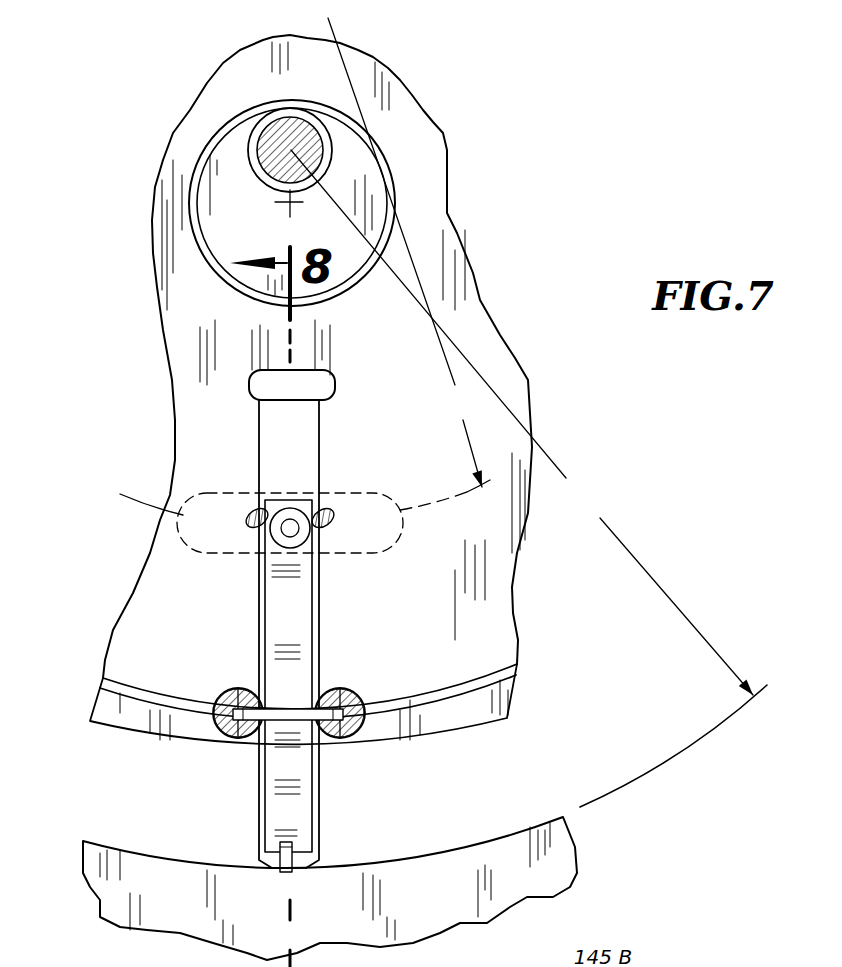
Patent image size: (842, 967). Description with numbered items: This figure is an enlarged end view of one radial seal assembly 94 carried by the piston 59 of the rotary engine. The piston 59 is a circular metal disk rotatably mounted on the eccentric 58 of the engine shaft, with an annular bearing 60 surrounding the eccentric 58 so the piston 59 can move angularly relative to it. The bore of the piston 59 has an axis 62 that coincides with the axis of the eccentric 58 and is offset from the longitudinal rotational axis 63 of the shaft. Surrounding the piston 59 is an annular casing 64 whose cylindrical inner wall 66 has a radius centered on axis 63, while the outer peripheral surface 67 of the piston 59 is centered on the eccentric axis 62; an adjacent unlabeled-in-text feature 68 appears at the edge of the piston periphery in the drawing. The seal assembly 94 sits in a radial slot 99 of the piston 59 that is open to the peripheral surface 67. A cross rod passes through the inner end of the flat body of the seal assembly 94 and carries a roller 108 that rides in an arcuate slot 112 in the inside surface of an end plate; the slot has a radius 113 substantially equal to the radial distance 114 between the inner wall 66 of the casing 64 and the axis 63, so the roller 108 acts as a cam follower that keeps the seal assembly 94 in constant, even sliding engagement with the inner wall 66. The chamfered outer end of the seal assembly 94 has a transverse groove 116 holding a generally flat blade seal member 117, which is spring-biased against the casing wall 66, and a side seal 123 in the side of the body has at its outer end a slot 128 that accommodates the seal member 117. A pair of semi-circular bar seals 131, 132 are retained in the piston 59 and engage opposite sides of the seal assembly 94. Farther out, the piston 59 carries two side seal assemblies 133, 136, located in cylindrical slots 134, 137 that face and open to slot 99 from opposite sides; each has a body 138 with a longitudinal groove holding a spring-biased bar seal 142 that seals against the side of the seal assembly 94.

The piston 59 is at (393, 72).
The eccentric 58 is at (350, 157).
The annular bearing 60 is at (387, 180).
The longitudinal rotational axis 63 is at (285, 147).
The axis of bore 62 is at (283, 203).
The radius of arcuate slot 113 is at (305, 266).
The radial distance 114 is at (522, 422).
The radial slot 99 is at (278, 428).
The seal assembly 94 is at (297, 621).
The roller 108 is at (292, 508).
The semi-circular bar seal 131 is at (256, 509).
The semi-circular bar seal 132 is at (326, 528).
The arcuate slot 112 is at (177, 540).
The guide rail upper surface 68 is at (500, 672).
The outer peripheral surface 67 is at (473, 727).
The side seal assembly 133 is at (208, 675).
The cylindrical slot 134 is at (218, 702).
The side seal assembly 136 is at (356, 668).
The cylindrical slot 137 is at (358, 690).
The bar seal 142 is at (252, 710).
The body 138 is at (232, 733).
The side seal 123 is at (307, 810).
The slot 128 is at (281, 840).
The transverse groove 116 is at (279, 862).
The blade seal member 117 is at (289, 872).
The cylindrical inner wall 66 is at (500, 835).
The casing 64 is at (552, 865).